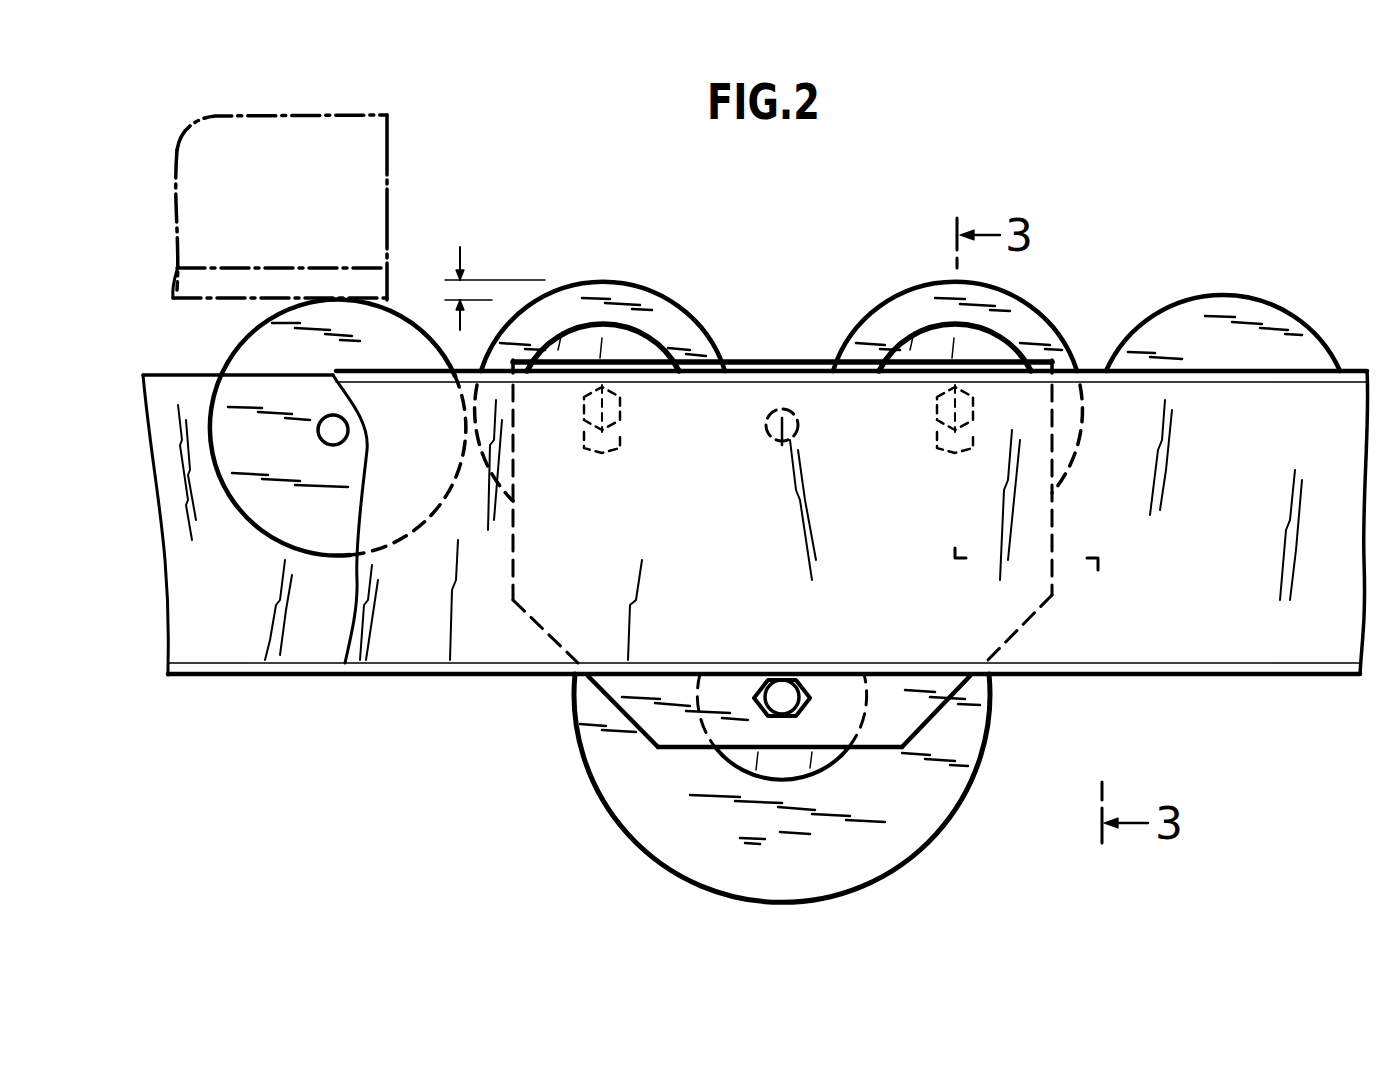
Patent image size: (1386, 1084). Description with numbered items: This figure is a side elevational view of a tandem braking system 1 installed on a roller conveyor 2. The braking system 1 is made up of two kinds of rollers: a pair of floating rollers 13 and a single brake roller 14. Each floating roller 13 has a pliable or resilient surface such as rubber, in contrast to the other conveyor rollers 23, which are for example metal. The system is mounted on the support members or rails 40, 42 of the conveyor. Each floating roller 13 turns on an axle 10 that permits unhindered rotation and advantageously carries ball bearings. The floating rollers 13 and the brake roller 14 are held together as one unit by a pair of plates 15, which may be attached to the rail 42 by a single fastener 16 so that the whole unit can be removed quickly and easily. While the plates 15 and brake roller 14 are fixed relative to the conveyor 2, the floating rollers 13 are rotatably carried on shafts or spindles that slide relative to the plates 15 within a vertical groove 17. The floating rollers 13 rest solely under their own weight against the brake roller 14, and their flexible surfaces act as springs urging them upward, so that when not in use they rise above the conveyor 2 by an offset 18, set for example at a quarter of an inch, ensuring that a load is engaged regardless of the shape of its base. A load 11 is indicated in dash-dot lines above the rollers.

The tandem braking system 1 is at (558, 834).
The roller conveyor 2 is at (1070, 212).
The axle 10 is at (620, 410).
The door panel 11 is at (378, 188).
The floating roller 13 is at (692, 323).
The brake roller 14 is at (952, 812).
The plate 15 is at (1058, 538).
The fastener 16 is at (764, 425).
The vertical groove 17 is at (624, 448).
The offset 18 is at (452, 292).
The conveyor roller 23 is at (230, 356).
The rail 40 is at (176, 636).
The rail 42 is at (437, 676).